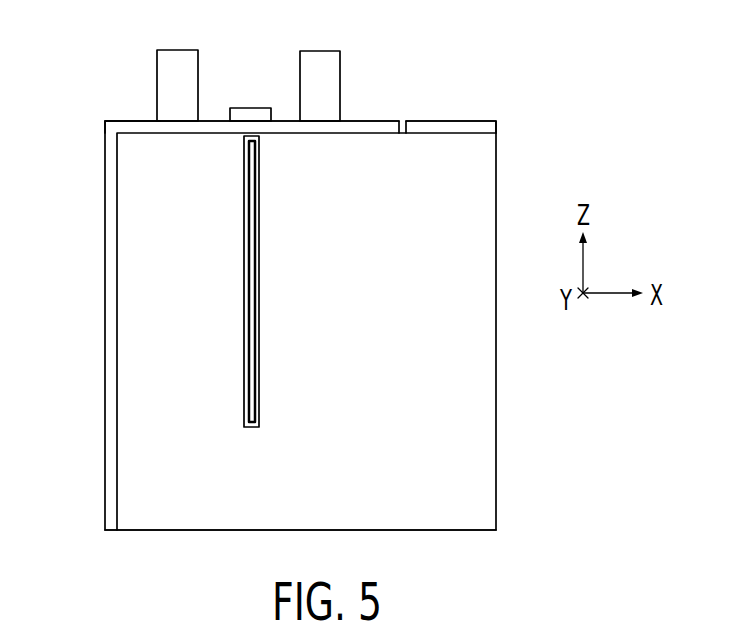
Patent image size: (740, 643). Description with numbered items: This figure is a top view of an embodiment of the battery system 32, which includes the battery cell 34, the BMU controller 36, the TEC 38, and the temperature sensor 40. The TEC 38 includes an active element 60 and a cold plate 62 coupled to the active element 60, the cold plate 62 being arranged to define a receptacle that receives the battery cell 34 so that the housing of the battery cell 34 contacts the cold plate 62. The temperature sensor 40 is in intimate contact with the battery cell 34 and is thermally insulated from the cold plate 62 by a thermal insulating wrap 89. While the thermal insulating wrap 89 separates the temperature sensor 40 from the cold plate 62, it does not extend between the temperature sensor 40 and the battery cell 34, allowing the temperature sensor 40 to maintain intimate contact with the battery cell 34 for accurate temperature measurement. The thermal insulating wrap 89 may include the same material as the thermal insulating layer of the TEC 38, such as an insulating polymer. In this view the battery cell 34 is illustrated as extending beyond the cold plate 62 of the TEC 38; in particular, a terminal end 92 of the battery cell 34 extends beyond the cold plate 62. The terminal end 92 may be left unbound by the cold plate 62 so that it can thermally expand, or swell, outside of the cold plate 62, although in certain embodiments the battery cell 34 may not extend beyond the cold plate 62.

The battery system 32 is at (100, 49).
The battery cell 34 is at (349, 123).
The BMU controller 36 is at (246, 115).
The TEC 38 is at (518, 141).
The temperature sensor 40 is at (254, 322).
The active element 60 is at (437, 127).
The cold plate 62 is at (352, 522).
The thermal insulating wrap 89 is at (256, 283).
The terminal end 92 is at (133, 128).